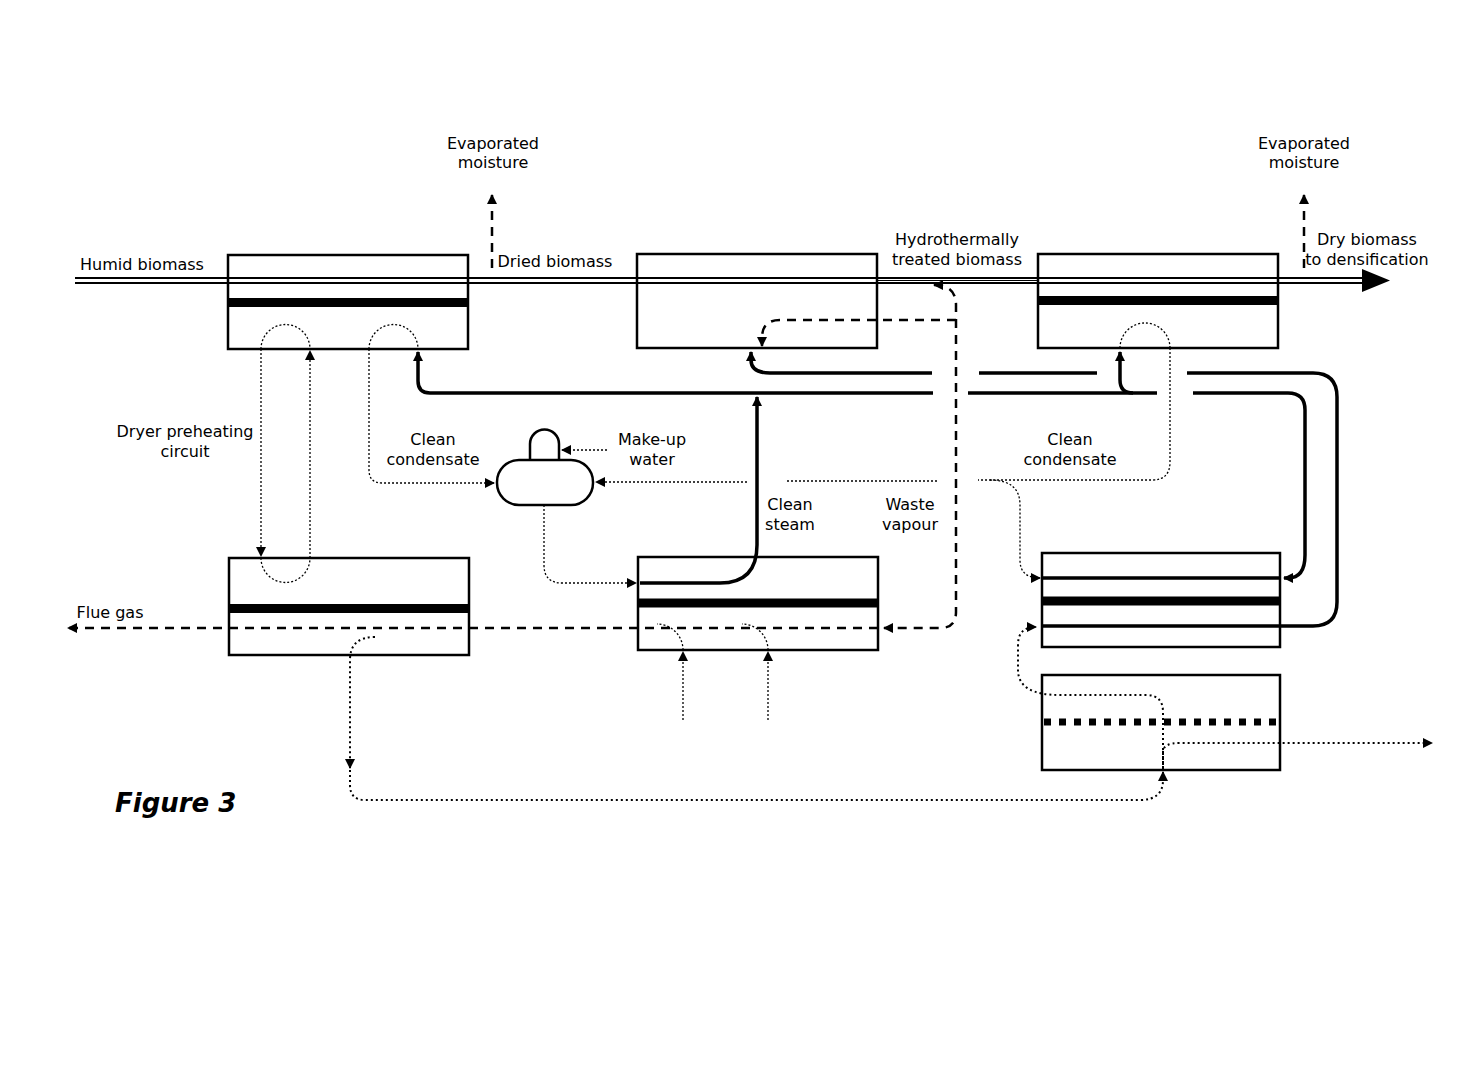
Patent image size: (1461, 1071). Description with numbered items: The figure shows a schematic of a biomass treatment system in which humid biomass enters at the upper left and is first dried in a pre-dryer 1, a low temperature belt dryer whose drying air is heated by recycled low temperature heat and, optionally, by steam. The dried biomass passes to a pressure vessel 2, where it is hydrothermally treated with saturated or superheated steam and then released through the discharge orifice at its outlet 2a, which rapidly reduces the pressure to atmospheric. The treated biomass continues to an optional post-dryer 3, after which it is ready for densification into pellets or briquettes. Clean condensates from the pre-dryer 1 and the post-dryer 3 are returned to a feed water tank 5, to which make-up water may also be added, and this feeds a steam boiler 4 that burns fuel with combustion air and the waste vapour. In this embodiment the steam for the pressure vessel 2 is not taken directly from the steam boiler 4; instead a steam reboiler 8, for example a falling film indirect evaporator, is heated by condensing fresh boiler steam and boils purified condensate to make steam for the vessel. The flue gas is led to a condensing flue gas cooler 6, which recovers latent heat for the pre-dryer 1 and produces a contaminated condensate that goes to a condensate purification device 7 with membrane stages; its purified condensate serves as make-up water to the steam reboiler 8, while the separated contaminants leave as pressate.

The pre-dryer 1 is at (287, 263).
The pressure vessel 2 is at (657, 260).
The outlet 2a is at (881, 252).
The post-dryer 3 is at (1108, 258).
The steam boiler 4 is at (787, 640).
The feed water tank 5 is at (517, 505).
The condensing flue gas cooler 6 is at (378, 640).
The condensate purification device 7 is at (1267, 703).
The steam reboiler 8 is at (1130, 562).